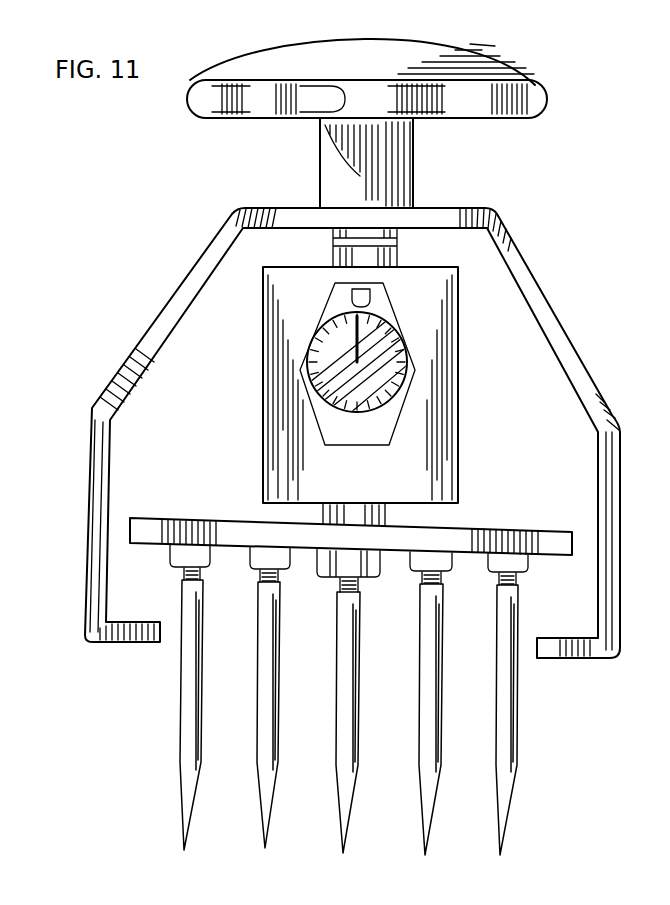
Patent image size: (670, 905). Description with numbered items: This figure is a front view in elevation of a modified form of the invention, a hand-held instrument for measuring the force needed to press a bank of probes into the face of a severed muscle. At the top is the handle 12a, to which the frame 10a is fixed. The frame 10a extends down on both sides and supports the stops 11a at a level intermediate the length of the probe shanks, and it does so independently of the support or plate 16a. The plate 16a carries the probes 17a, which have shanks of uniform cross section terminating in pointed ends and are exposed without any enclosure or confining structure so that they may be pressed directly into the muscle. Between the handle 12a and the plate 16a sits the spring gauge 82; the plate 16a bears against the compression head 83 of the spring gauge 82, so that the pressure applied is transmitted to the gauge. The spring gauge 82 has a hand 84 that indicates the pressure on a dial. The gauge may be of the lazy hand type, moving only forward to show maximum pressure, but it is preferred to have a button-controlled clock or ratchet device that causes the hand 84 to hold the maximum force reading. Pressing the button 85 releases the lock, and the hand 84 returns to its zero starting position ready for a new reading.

The frame 10a is at (614, 428).
The stops 11a is at (573, 658).
The handle 12a is at (415, 177).
The plate 16a is at (513, 532).
The needles 17a is at (515, 768).
The spring gauge 82 is at (458, 410).
The compression head 83 is at (386, 523).
The hand 84 is at (395, 345).
The button 85 is at (370, 293).